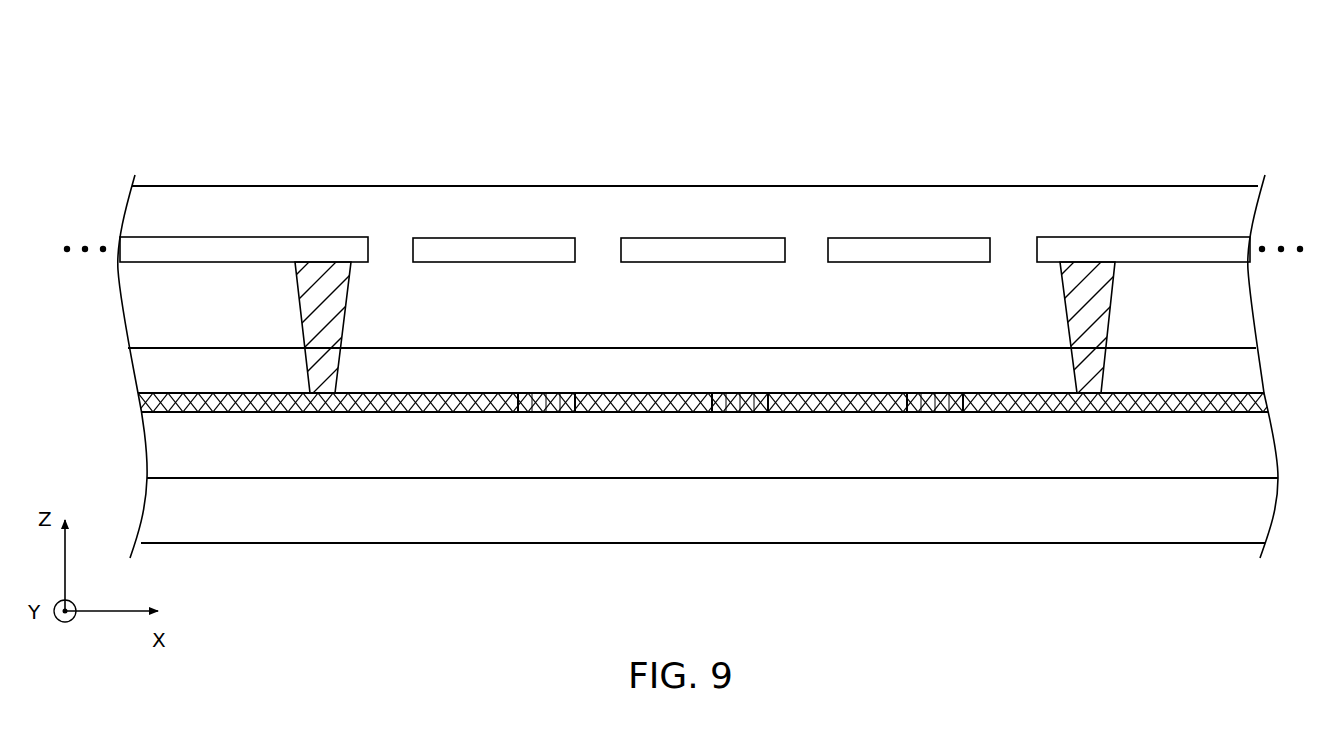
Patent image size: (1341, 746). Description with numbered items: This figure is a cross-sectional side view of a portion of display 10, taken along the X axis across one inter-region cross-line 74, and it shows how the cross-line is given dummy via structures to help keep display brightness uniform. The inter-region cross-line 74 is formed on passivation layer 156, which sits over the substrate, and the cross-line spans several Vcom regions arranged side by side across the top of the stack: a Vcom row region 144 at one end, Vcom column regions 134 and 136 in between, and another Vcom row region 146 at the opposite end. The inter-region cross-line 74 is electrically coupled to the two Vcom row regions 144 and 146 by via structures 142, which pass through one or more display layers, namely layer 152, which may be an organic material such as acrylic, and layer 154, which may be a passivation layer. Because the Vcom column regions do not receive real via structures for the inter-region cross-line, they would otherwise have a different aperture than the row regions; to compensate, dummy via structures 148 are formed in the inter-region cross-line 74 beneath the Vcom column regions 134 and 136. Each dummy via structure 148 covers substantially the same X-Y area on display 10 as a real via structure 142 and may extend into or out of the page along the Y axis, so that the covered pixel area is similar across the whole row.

The display 10 is at (1218, 75).
The inter-region cross-line 74 is at (1265, 403).
The Vcom column region 134 is at (467, 263).
The Vcom column region 136 is at (672, 263).
The via structure 142 is at (346, 310).
The Vcom row region 144 is at (209, 263).
The Vcom row region 146 is at (1192, 263).
The dummy via structure 148 is at (545, 412).
The organic layer 152 is at (1240, 300).
The passivation layer 154 is at (1252, 370).
The passivation layer 156 is at (1262, 440).